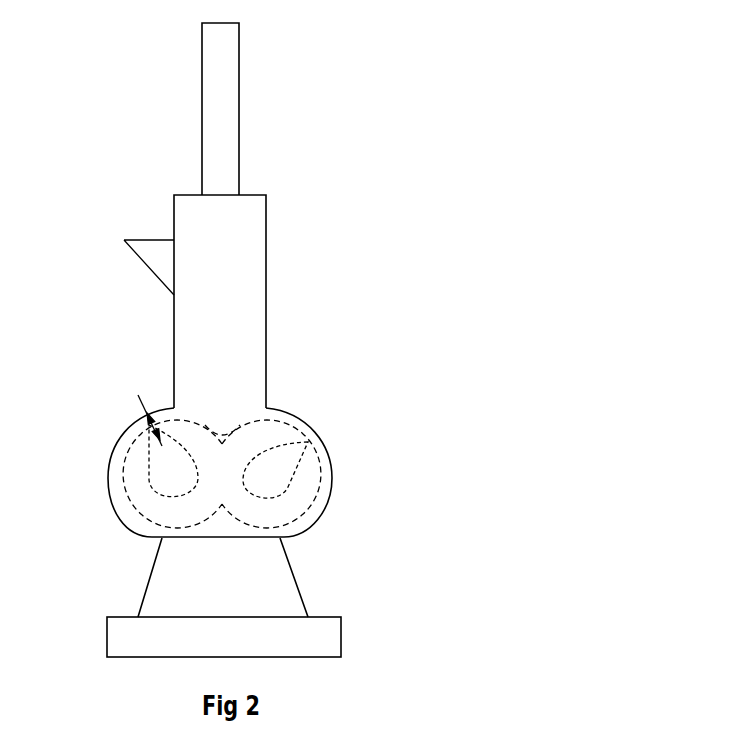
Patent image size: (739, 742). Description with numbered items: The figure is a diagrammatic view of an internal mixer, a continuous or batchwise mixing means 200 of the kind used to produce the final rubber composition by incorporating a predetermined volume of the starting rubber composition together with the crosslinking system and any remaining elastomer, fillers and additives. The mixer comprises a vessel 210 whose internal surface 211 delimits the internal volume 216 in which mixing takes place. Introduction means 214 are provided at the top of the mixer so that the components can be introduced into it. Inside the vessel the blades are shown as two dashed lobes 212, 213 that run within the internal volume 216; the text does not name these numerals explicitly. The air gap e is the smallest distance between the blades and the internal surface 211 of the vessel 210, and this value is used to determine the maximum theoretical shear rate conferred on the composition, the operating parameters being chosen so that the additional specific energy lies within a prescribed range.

The mixing means 200 is at (321, 234).
The vessel 210 is at (310, 530).
The internal surface 211 is at (312, 512).
The right cavity 212 is at (283, 470).
The left cavity 213 is at (157, 473).
The introduction means 214 is at (160, 262).
The internal volume 216 is at (258, 434).
The air gap e is at (142, 419).